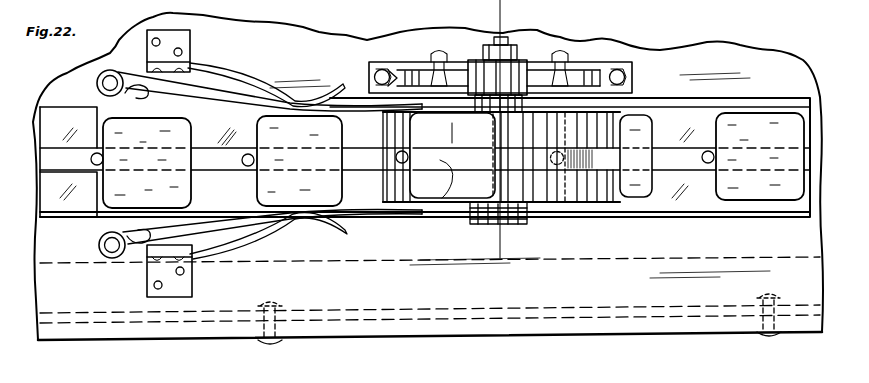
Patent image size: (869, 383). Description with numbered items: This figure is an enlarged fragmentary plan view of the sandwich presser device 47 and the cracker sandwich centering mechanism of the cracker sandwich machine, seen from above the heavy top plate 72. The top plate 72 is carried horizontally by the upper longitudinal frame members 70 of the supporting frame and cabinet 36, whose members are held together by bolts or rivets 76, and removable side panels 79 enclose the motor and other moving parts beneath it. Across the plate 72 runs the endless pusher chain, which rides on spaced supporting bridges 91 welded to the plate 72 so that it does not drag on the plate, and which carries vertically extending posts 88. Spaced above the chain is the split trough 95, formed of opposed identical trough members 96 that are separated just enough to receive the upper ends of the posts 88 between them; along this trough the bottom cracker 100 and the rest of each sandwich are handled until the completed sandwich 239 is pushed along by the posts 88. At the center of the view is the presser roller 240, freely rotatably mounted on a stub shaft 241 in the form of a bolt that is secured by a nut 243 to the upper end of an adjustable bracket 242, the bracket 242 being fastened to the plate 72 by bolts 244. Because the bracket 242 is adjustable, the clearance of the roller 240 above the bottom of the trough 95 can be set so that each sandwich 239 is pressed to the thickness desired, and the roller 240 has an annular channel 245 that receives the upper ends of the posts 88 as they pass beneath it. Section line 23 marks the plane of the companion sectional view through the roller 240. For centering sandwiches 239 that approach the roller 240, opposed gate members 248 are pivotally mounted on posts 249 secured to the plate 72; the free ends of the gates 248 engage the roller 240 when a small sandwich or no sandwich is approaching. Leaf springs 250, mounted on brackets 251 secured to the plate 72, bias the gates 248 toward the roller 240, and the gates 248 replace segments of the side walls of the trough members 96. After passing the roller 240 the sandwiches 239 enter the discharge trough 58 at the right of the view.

The section line 23- 23 is at (490, 15).
The supporting frame and cabinet 36 is at (410, 340).
The sandwich presser device 47 is at (648, 90).
The discharge trough 58 is at (740, 99).
The upper longitudinal frame member 70 is at (607, 352).
The top plate 72 is at (758, 42).
The bolts or rivets 76 is at (266, 342).
The removable side panel 79 is at (553, 318).
The post 88 is at (91, 160).
The supporting bridge 91 is at (605, 6).
The split trough 95 is at (86, 230).
The trough member 96 is at (173, 118).
The bottom cracker 100 is at (113, 182).
The completed sandwich 239 is at (124, 118).
The presser roller 240 is at (553, 204).
The stub shaft 241 is at (512, 50).
The adjustable bracket 242 is at (590, 65).
The nut 243 is at (480, 52).
The bolts 244 is at (378, 66).
The annular channel 245 is at (452, 200).
The gate member 248 is at (215, 115).
The post 249 is at (124, 80).
The leaf spring 250 is at (255, 83).
The bracket 251 is at (180, 48).